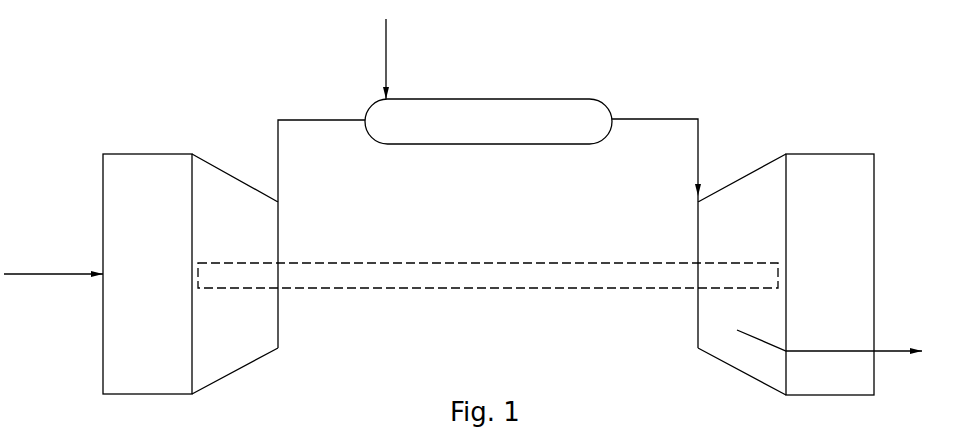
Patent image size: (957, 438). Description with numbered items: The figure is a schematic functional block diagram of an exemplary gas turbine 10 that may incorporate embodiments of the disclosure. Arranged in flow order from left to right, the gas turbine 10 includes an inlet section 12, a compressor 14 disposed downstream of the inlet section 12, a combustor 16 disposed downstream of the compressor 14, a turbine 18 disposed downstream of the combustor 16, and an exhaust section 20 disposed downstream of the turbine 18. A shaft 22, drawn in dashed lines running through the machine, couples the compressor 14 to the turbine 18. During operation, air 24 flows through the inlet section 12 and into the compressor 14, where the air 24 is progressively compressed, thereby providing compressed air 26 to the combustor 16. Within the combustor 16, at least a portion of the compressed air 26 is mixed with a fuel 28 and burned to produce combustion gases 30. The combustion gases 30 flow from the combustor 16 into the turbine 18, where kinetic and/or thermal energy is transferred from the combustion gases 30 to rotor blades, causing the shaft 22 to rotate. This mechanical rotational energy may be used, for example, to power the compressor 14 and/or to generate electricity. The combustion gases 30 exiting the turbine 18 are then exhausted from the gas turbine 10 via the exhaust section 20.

The gas turbine 10 is at (331, 45).
The inlet section 12 is at (145, 153).
The compressor 14 is at (207, 160).
The combustor 16 is at (545, 99).
The turbine 18 is at (766, 160).
The exhaust section 20 is at (845, 153).
The shaft 22 is at (372, 287).
The air 24 is at (70, 273).
The compressed air 26 is at (313, 121).
The fuel 28 is at (386, 49).
The combustion gases 30 is at (640, 120).